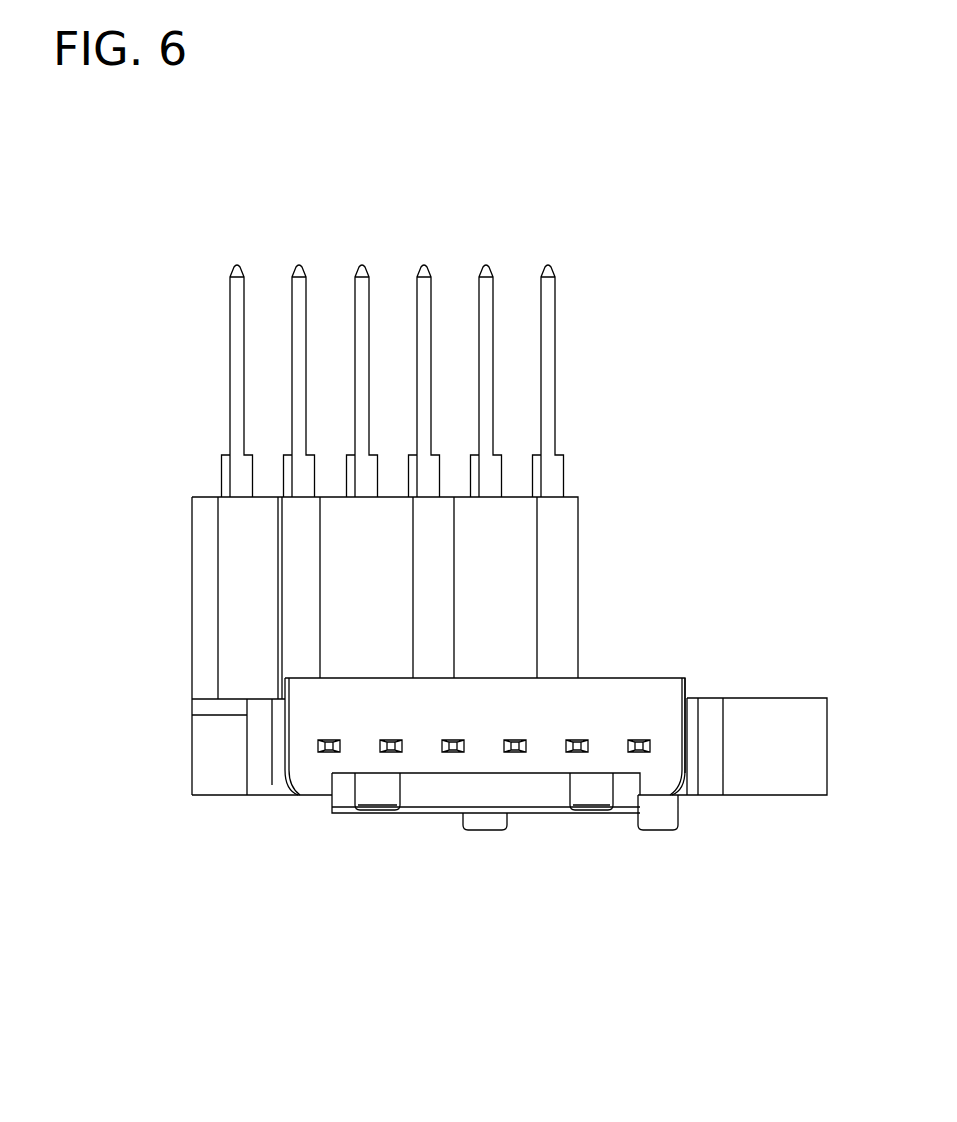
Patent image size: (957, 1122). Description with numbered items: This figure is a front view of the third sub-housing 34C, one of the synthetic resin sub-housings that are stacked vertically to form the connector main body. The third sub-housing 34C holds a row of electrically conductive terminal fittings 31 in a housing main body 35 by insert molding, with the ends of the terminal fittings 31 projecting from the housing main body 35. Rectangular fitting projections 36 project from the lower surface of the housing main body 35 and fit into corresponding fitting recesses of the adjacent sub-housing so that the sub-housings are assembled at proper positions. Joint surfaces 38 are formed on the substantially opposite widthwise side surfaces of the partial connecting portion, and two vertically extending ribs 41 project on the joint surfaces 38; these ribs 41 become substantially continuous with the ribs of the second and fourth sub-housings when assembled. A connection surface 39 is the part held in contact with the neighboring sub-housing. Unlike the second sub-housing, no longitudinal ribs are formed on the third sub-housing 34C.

The terminal fitting 31 is at (236, 294).
The third sub-housing 34C is at (634, 291).
The housing main body 35 is at (197, 729).
The fitting projection 36 is at (372, 800).
The joint surface 38 is at (287, 758).
The connection surface 39 is at (603, 678).
The rib 41 is at (277, 740).